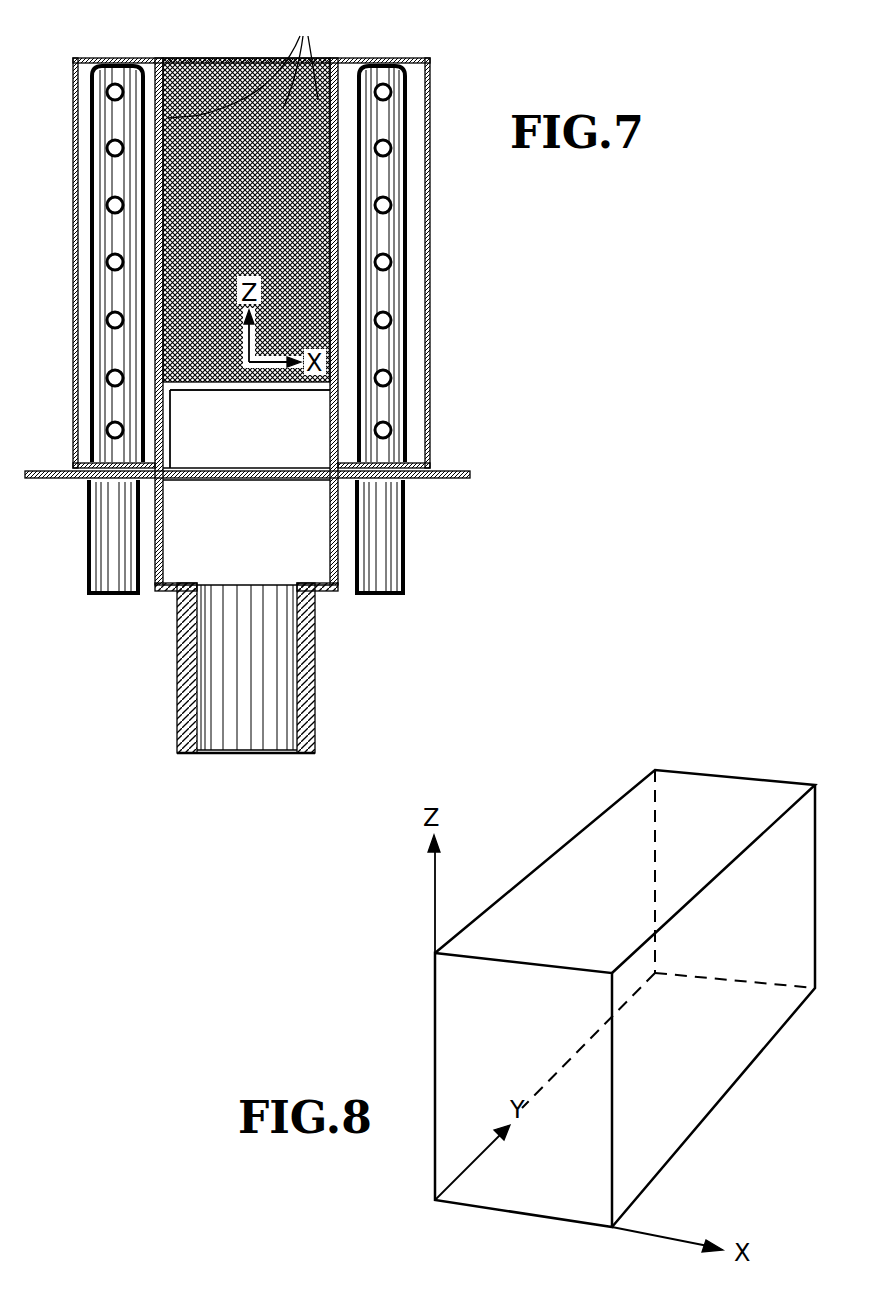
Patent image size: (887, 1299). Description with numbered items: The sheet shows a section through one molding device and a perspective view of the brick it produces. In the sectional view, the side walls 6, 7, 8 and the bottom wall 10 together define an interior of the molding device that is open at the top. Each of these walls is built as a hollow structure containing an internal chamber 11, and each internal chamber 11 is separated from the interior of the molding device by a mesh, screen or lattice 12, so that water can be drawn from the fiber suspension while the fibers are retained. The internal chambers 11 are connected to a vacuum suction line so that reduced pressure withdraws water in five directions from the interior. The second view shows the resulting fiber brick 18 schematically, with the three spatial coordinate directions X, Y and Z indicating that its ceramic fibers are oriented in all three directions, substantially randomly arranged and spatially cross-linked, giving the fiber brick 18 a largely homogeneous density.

In FIG. 7, the side wall 6 is at (73, 233).
In FIG. 7, the side wall 7 is at (258, 229).
In FIG. 7, the side wall 8 is at (430, 234).
In FIG. 7, the bottom wall 10 is at (318, 412).
In FIG. 7, the internal chamber 11 is at (82, 300).
In FIG. 7, the mesh, screen or lattice 12 is at (246, 61).
In FIG. 8, the fiber brick 18 is at (748, 742).